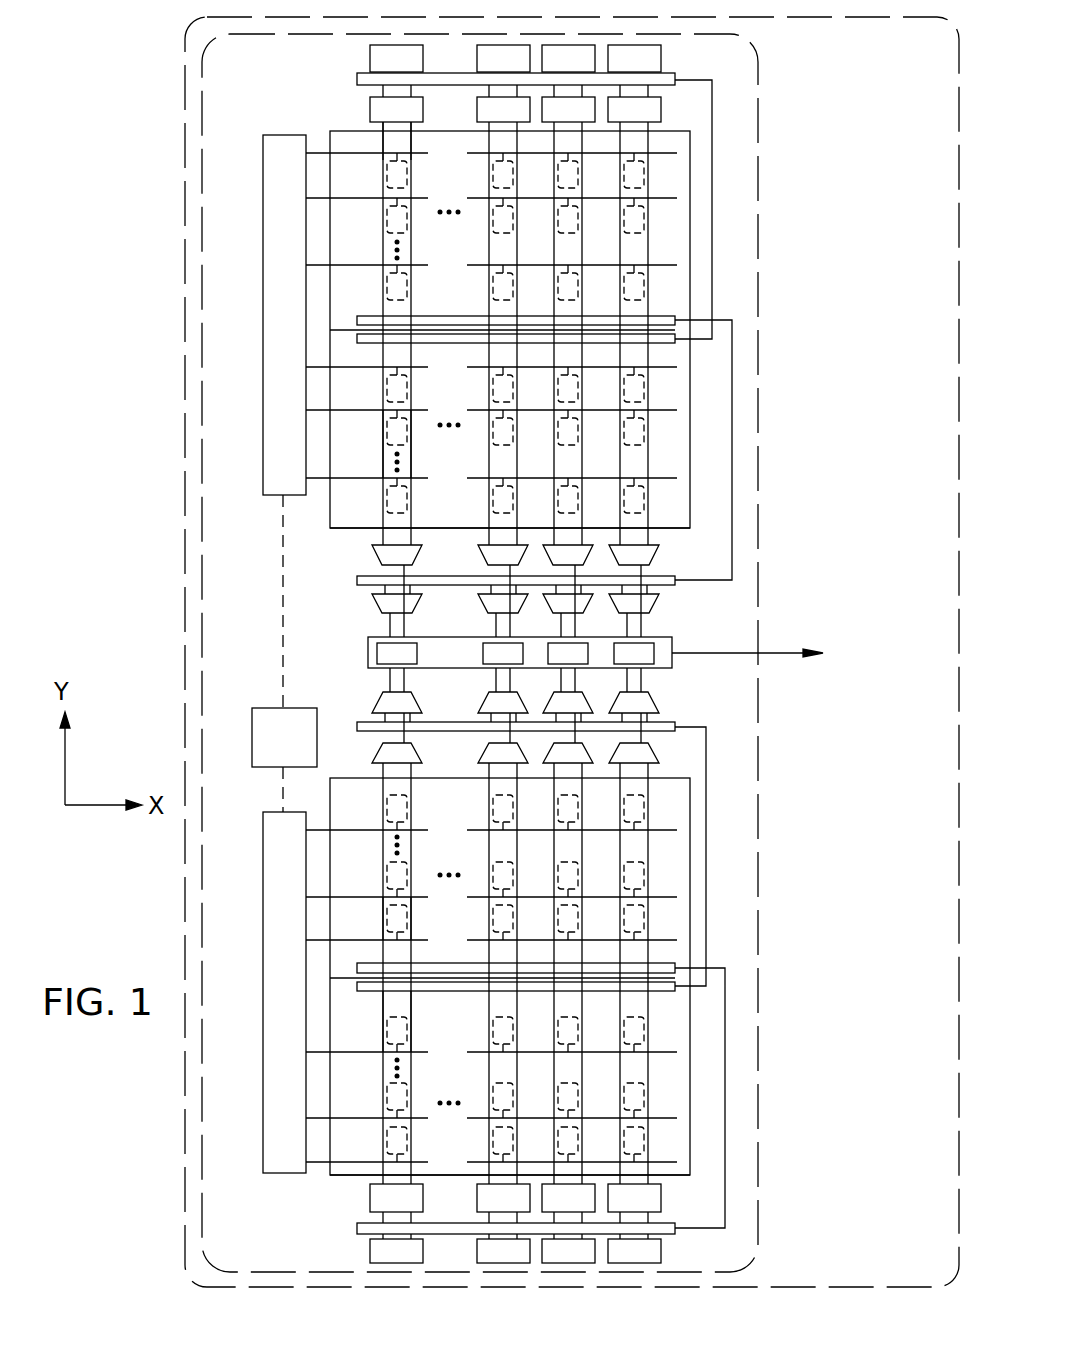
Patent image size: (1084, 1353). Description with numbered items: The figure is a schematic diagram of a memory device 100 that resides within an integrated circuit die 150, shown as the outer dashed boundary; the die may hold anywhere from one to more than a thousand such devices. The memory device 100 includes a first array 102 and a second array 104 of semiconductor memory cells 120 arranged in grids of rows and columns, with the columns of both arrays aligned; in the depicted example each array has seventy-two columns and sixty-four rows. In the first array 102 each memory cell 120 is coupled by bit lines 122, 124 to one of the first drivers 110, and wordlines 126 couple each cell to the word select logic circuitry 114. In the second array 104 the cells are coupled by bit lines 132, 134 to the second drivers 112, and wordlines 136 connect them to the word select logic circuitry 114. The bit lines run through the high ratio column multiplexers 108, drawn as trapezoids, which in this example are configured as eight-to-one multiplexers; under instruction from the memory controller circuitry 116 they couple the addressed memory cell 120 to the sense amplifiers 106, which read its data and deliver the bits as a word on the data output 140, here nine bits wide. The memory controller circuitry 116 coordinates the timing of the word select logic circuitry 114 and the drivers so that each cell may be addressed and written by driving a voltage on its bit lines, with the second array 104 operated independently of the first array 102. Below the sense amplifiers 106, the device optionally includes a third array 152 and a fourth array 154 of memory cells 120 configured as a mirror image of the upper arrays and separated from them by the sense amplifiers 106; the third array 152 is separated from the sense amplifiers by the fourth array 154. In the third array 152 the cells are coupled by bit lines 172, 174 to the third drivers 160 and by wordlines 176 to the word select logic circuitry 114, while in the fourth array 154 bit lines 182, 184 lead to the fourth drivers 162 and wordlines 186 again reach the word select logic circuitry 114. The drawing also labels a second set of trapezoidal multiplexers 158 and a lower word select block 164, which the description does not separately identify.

The memory device 100 is at (759, 222).
The first array 102 is at (330, 133).
The second array 104 is at (330, 522).
The sense amplifiers 106 is at (384, 655).
The high ratio column multiplexers 108 is at (430, 628).
The first drivers 110 is at (413, 108).
The second drivers 112 is at (413, 60).
The word select logic circuitry 114 is at (275, 291).
The memory controller circuitry 116 is at (306, 752).
The semiconductor memory cells 120 is at (423, 1080).
The bit line 122 is at (381, 146).
The bit line 124 is at (412, 137).
The wordlines 126 is at (318, 153).
The bit line 132 is at (382, 420).
The bit line 134 is at (411, 440).
The wordlines 136 is at (318, 410).
The data output 140 is at (785, 652).
The integrated circuit die 150 is at (906, 308).
The third array 152 is at (330, 1173).
The fourth array 154 is at (330, 808).
The multiplexers 158 is at (720, 756).
The third drivers 160 is at (660, 1198).
The fourth drivers 162 is at (660, 1250).
The row decoder 164 is at (272, 905).
The bit line 172 is at (411, 1010).
The bit line 174 is at (382, 1010).
The wordlines 176 is at (318, 1052).
The bit line 182 is at (410, 908).
The bit line 184 is at (382, 935).
The wordlines 186 is at (318, 940).